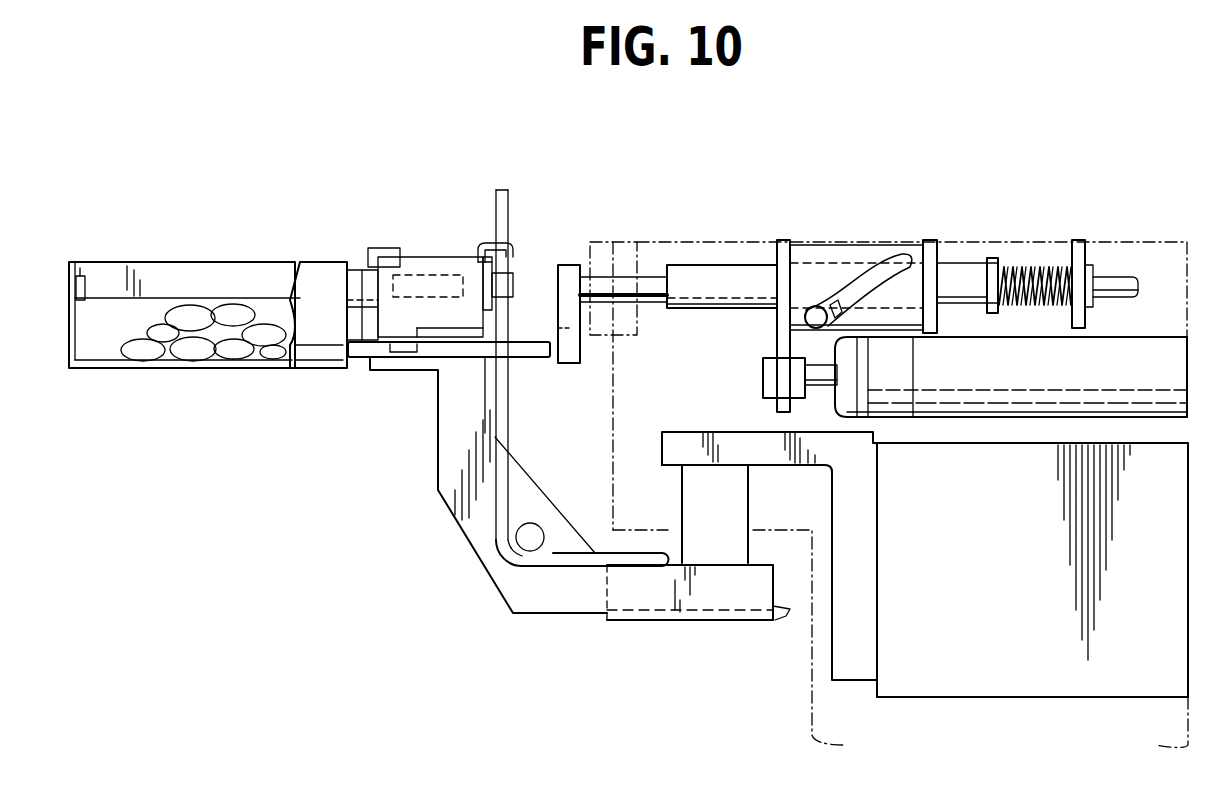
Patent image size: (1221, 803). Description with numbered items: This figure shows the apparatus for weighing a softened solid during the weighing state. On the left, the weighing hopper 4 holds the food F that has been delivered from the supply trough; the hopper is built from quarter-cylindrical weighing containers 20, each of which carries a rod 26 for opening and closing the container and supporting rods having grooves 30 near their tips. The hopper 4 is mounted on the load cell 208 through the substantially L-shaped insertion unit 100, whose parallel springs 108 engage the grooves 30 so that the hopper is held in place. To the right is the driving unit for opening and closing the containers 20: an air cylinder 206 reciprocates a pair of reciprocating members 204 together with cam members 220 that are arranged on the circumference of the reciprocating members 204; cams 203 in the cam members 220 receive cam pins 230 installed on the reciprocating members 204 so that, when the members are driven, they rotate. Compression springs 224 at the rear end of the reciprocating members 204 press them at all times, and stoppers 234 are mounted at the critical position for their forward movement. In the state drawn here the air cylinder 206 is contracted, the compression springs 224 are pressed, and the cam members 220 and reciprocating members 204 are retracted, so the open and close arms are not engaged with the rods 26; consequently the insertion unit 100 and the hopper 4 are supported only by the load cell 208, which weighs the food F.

The weighing hopper 4 is at (165, 250).
The food F is at (226, 300).
The weighing container 20 is at (322, 262).
The parallel spring 108 is at (497, 190).
The groove 30 is at (502, 278).
The rod for opening and closing 26 is at (538, 358).
The insertion unit 100 is at (455, 530).
The stopper 234 is at (622, 243).
The reciprocating member 204 is at (722, 268).
The cam pin 230 is at (807, 308).
The cam 203 is at (868, 290).
The cam member 220 is at (915, 240).
The compression spring 224 is at (1040, 290).
The air cylinder 206 is at (1157, 340).
The load cell 208 is at (1022, 537).